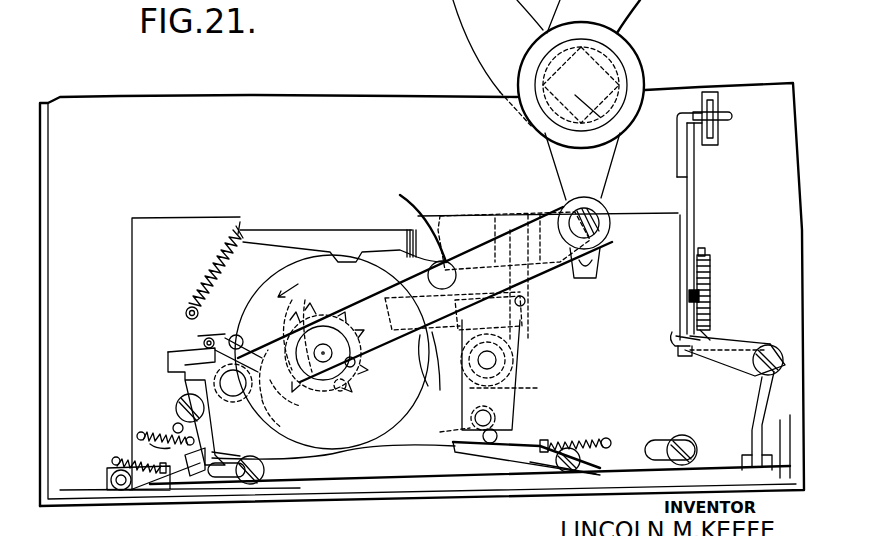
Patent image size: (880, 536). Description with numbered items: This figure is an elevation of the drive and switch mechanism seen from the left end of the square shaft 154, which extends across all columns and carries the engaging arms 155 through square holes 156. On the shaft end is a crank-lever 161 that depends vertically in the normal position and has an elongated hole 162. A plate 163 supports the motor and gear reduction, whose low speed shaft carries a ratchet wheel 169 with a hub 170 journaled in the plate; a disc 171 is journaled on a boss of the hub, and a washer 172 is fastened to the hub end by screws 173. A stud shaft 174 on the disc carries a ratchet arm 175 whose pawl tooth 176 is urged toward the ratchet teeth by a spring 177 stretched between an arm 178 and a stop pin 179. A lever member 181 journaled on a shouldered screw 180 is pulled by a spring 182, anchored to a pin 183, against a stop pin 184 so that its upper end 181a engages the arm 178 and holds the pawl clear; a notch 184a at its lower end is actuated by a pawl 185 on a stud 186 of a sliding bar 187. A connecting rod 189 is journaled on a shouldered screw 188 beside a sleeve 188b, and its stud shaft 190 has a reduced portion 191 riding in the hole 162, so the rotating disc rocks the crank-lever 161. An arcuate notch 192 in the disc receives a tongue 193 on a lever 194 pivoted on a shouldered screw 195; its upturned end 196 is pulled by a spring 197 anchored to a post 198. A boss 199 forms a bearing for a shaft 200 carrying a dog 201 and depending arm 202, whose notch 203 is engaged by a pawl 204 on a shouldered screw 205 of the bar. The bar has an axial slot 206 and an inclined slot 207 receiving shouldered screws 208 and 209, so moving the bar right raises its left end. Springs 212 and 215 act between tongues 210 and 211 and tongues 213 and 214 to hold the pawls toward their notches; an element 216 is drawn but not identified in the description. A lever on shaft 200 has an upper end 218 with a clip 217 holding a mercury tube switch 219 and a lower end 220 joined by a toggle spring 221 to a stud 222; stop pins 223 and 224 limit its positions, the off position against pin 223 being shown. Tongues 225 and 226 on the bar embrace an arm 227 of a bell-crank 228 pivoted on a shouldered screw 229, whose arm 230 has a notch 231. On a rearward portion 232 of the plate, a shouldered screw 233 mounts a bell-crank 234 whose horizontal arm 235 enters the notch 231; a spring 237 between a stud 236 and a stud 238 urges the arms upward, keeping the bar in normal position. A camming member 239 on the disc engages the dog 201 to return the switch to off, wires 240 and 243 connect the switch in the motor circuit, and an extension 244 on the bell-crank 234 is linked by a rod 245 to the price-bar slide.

The square shaft 154 is at (608, 68).
The engaging arms 155 is at (512, 64).
The square holes 156 is at (612, 108).
The crank-lever 161 is at (600, 152).
The elongated hole 162 is at (599, 258).
The plate 163 is at (132, 258).
The ratchet wheel 169 is at (286, 266).
The hub 170 is at (330, 330).
The disc 171 is at (276, 271).
The washer 172 is at (356, 366).
The screws 173 is at (343, 392).
The stud shaft 174 is at (235, 335).
The ratchet arm 175 is at (240, 370).
The pawl tooth 176 is at (293, 401).
The spring 177 is at (203, 342).
The arm 178 is at (198, 336).
The stop pin 179 is at (278, 431).
The shouldered screw 180 is at (178, 406).
The lever member 181 is at (182, 382).
The upper end of lever member 181a is at (182, 358).
The spring 182 is at (161, 453).
The pin 183 is at (137, 437).
The stop pin 184 is at (173, 428).
The notch 184a is at (216, 460).
The pawl 185 is at (190, 478).
The stud 186 is at (120, 490).
The bar 187 is at (346, 470).
The shouldered screw 188 is at (250, 405).
The sleeve 188b is at (271, 336).
The connecting rod 189 is at (443, 361).
The stud shaft 190 is at (606, 241).
The reduced-diameter portion 191 is at (606, 207).
The arcuate notch 192 is at (428, 272).
The tongue 193 is at (346, 252).
The lever 194 is at (310, 232).
The shouldered screw 195 is at (418, 222).
The upturned end 196 is at (240, 222).
The spring 197 is at (212, 252).
The post 198 is at (186, 312).
The boss 199 is at (520, 358).
The shaft 200 is at (520, 388).
The dog 201 is at (438, 359).
The depending arm 202 is at (500, 410).
The notch 203 is at (500, 437).
The pawl 204 is at (504, 454).
The shouldered screw 205 is at (562, 470).
The slot 206 is at (670, 440).
The slot 207 is at (232, 478).
The shouldered screw 208 is at (700, 440).
The shouldered screw 209 is at (258, 482).
The upturned tongue 210 is at (162, 474).
The tongue 211 is at (112, 461).
The spring 212 is at (150, 462).
The upturned tongue 213 is at (524, 468).
The tongue 214 is at (608, 438).
The spring 215 is at (596, 452).
The spring 216 is at (582, 437).
The clip 217 is at (520, 214).
The upper end of lever 218 is at (522, 324).
The mercury tube switch 219 is at (466, 214).
The lower end of lever 220 is at (574, 388).
The toggle spring 221 is at (456, 420).
The stud 222 is at (456, 430).
The stop pin 223 is at (525, 300).
The stop pin 224 is at (443, 310).
The lateral tongue 225 is at (745, 455).
The lateral tongue 226 is at (772, 477).
The arm 227 is at (756, 412).
The bell-crank 228 is at (771, 339).
The shouldered screw 229 is at (750, 365).
The arm 230 is at (726, 345).
The notch 231 is at (672, 338).
The rearwardly extending portion 232 is at (680, 262).
The shouldered screw 233 is at (700, 298).
The bell-crank 234 is at (695, 238).
The horizontal arm 235 is at (680, 352).
The stud 236 is at (710, 336).
The spring 237 is at (710, 275).
The second stud 238 is at (705, 255).
The camming member 239 is at (441, 371).
The wire 240 is at (535, 304).
The wire 243 is at (488, 313).
The extension 244 is at (716, 121).
The rod 245 is at (720, 99).